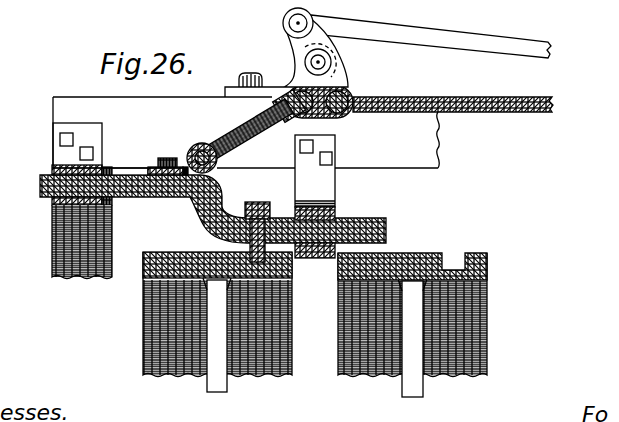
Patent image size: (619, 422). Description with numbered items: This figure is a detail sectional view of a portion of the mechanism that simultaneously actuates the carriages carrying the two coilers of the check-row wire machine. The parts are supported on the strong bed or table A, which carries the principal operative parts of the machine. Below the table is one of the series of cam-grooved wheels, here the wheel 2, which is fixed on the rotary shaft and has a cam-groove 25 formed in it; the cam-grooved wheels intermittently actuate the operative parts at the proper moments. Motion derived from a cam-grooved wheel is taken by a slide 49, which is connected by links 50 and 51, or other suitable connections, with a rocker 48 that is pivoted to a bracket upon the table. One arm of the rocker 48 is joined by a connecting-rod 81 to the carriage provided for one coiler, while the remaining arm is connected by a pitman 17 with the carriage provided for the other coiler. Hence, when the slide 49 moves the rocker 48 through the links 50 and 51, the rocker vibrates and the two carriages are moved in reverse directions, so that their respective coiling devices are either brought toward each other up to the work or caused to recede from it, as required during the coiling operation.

The cam-grooved wheel 2 is at (324, 324).
The cam-groove 25 is at (412, 260).
The bed or table A is at (239, 176).
The slide 49 is at (308, 198).
The link 51 is at (347, 116).
The link 50 is at (246, 131).
The lever 17 is at (443, 36).
The rocker 48 is at (339, 74).
The connecting-rod 81 is at (465, 106).